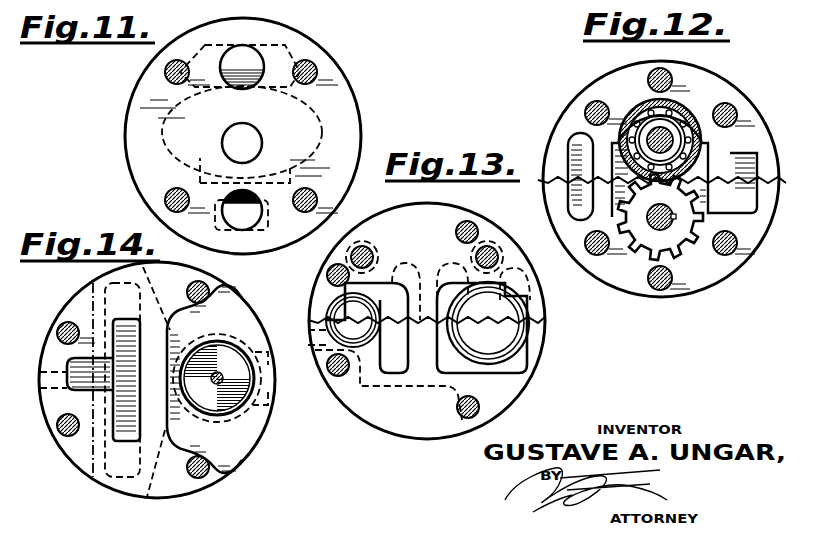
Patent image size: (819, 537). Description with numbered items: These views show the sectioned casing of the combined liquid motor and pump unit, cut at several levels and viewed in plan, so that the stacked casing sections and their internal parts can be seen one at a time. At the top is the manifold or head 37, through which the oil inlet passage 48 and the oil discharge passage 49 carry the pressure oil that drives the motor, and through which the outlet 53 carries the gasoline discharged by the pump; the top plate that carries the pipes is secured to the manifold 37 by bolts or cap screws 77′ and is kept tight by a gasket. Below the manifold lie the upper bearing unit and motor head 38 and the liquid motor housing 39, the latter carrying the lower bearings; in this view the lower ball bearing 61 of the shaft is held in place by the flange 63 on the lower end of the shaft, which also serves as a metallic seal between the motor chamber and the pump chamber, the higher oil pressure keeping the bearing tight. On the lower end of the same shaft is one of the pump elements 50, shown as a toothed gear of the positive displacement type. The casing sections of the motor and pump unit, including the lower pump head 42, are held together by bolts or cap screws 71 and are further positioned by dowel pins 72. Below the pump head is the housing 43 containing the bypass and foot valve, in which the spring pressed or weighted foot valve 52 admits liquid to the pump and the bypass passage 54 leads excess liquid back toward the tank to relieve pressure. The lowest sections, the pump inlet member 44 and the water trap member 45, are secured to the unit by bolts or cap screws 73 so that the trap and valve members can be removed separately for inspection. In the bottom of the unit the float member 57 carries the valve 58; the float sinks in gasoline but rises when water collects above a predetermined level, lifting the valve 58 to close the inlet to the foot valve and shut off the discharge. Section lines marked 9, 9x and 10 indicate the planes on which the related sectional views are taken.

In FIG. 11, the manifold or head 37 is at (137, 107).
In FIG. 11, the outlet 53 is at (247, 60).
In FIG. 11, the bolts or cap screws 77′ is at (313, 66).
In FIG. 12, the bolts or cap screws 77′ is at (733, 112).
In FIG. 11, the discharge passage 49 is at (252, 140).
In FIG. 11, the inlet passage 48 is at (247, 203).
In FIG. 11, the section line 9- 9 is at (158, 230).
In FIG. 12, the upper bearing unit and motor head 38 is at (572, 116).
In FIG. 12, the liquid motor housing 39 is at (714, 272).
In FIG. 12, the flange 63 is at (636, 110).
In FIG. 12, the ball bearing 61 is at (672, 132).
In FIG. 12, the pump elements 50 is at (652, 250).
In FIG. 12, the dowel pins 72 is at (663, 289).
In FIG. 12, the section line 10- 10 is at (536, 181).
In FIG. 13, the lower pump head 42 is at (323, 292).
In FIG. 13, the housing 43 is at (398, 423).
In FIG. 13, the bolts or cap screws 73 is at (334, 368).
In FIG. 14, the bolts or cap screws 73 is at (61, 326).
In FIG. 13, the bolts or cap screws 71 is at (362, 247).
In FIG. 13, the bypass passage 54 is at (370, 292).
In FIG. 13, the foot valve 52 is at (488, 323).
In FIG. 13, the section line 9x- 9x is at (510, 197).
In FIG. 14, the pump inlet member 44 is at (80, 452).
In FIG. 14, the valve 58 is at (233, 365).
In FIG. 12, the float member 57 is at (540, 2).
In FIG. 14, the float member 57 is at (265, 428).
In FIG. 12, the water trap member 45 is at (578, 2).